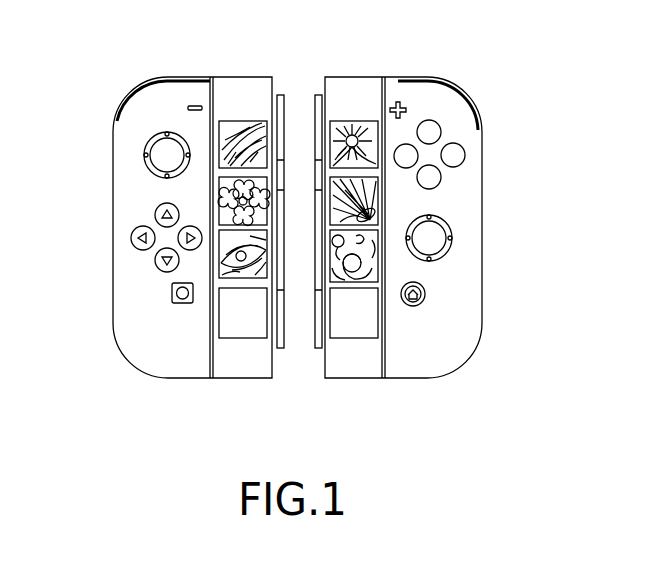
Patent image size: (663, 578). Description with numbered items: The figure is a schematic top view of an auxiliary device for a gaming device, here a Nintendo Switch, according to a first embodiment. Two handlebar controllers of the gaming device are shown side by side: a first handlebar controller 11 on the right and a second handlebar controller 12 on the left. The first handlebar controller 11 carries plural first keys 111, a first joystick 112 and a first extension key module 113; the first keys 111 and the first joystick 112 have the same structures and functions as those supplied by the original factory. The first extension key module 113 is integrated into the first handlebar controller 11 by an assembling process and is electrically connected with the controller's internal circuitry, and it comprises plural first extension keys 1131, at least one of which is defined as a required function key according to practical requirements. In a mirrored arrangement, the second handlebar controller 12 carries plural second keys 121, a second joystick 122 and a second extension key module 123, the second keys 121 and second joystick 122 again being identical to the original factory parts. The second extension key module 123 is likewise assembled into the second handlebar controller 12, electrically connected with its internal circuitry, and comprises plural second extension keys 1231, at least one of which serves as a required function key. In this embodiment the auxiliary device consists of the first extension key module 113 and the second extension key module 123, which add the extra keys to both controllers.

The first handlebar controller 11 is at (428, 244).
The first keys 111 is at (458, 148).
The first joystick 112 is at (432, 222).
The first extension key module 113 is at (426, 244).
The first extension keys 1131 is at (355, 176).
The second handlebar controller 12 is at (168, 237).
The second keys 121 is at (140, 226).
The second joystick 122 is at (162, 152).
The second extension key module 123 is at (184, 237).
The second extension keys 1231 is at (237, 124).